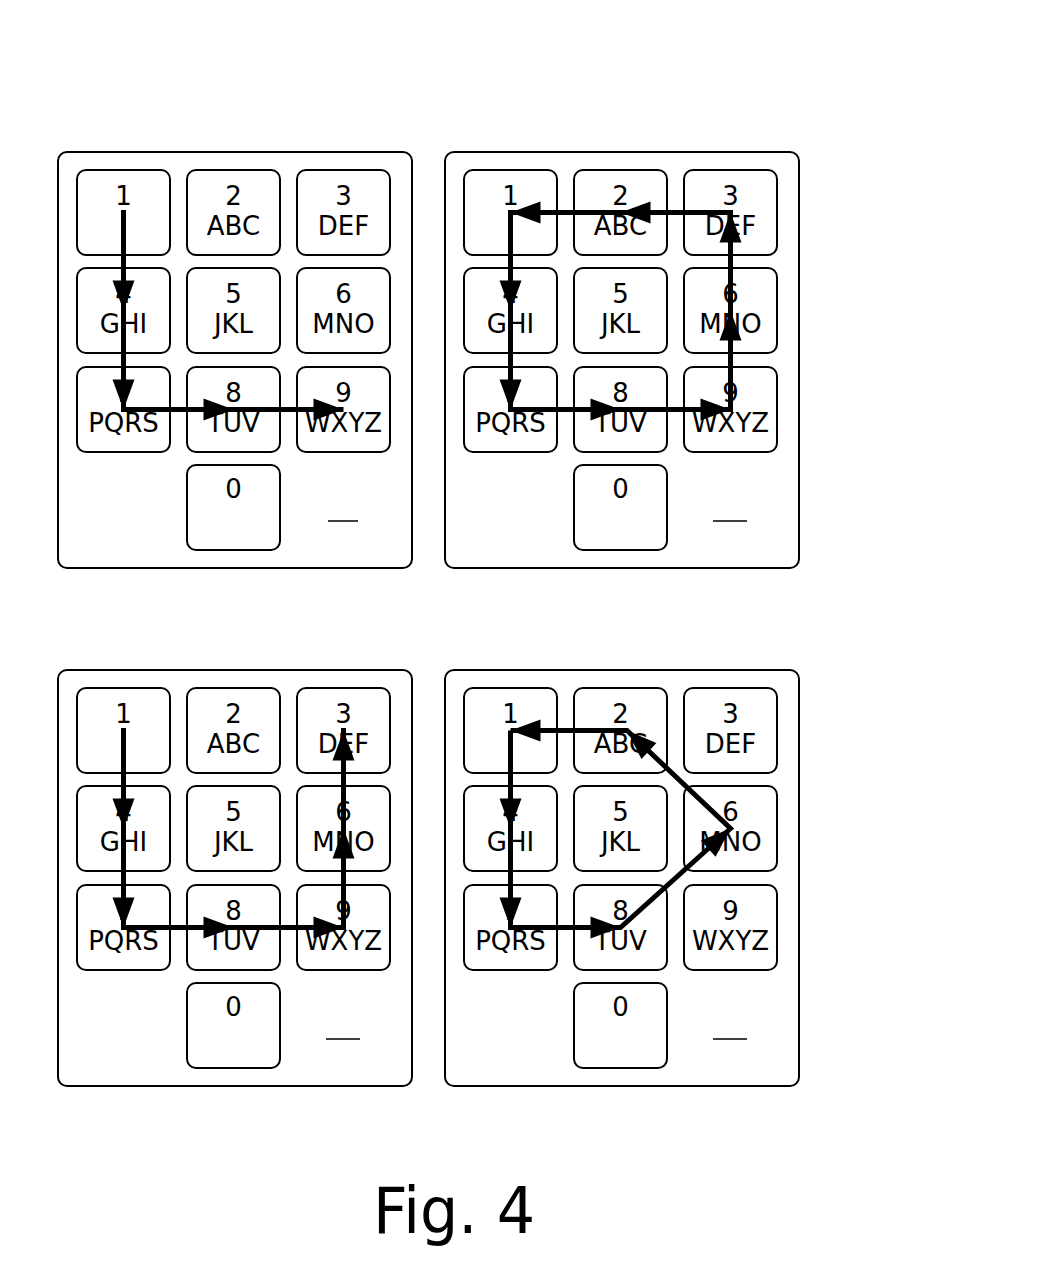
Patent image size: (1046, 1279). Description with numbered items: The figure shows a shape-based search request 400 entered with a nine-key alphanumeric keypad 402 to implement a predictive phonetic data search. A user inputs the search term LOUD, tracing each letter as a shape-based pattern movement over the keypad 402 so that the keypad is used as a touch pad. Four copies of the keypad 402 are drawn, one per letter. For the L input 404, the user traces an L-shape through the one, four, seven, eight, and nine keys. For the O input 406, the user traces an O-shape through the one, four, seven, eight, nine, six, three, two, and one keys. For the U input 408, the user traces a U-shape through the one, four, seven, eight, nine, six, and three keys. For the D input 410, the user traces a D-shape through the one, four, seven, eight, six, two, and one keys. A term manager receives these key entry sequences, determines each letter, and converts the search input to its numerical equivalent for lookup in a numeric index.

The shape-based search request 400 is at (528, 68).
The 9-Key alphanumeric keypad 402 is at (126, 547).
The L input 404 is at (235, 328).
The O input 406 is at (622, 328).
The U input 408 is at (235, 846).
The D input 410 is at (622, 846).